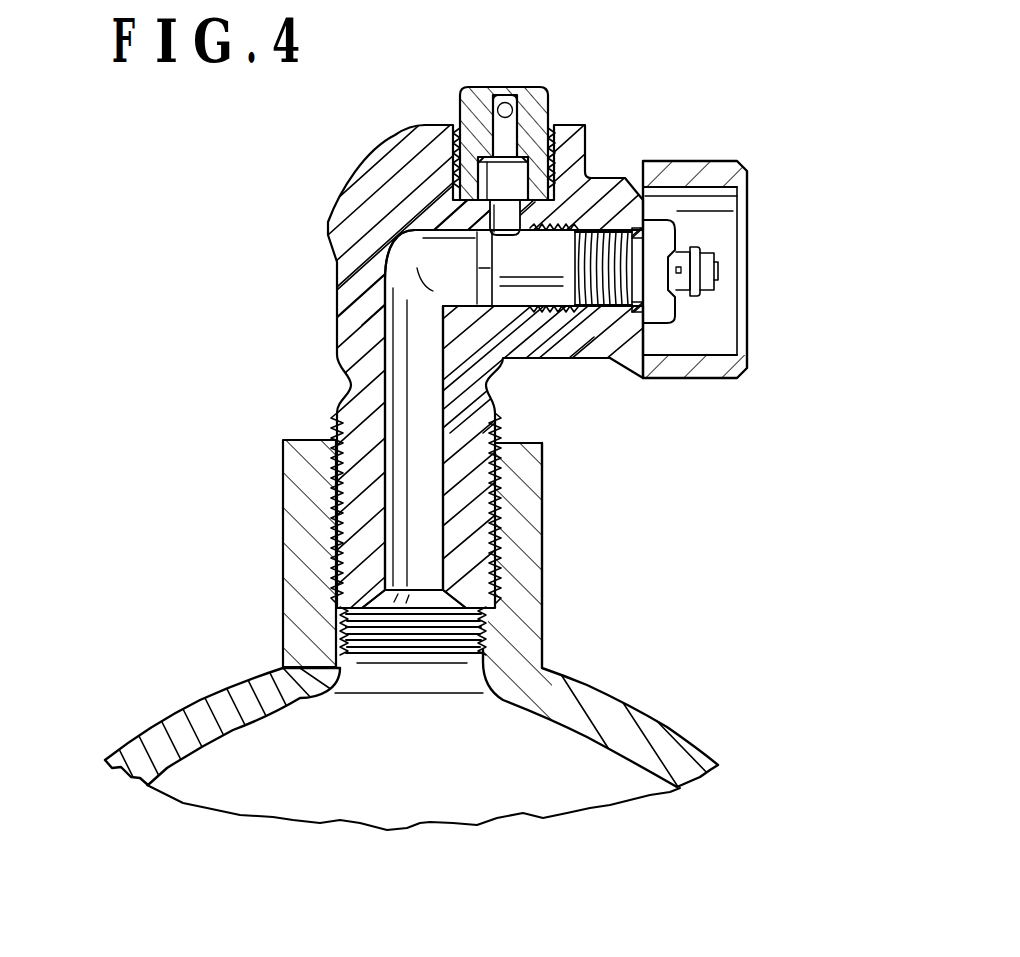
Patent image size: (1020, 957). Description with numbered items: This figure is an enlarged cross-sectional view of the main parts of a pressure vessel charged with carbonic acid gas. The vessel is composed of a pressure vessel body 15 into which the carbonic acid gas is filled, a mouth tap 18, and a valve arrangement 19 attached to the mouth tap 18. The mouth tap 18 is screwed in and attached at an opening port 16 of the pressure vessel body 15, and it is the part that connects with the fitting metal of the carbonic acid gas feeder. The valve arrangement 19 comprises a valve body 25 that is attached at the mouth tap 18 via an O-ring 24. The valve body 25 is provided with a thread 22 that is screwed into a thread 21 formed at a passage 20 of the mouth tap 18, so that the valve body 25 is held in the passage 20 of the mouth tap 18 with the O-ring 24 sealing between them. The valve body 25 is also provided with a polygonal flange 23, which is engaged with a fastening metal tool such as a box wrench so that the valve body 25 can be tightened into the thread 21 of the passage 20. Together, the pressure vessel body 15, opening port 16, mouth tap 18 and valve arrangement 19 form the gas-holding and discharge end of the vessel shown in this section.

The pressure vessel body 15 is at (628, 712).
The opening port 16 is at (392, 657).
The mouth tap 18 is at (349, 181).
The valve arrangement 19 is at (722, 260).
The passage 20 is at (413, 325).
The thread 21 is at (591, 302).
The thread 22 is at (600, 226).
The polygonal flange 23 is at (660, 222).
The O-ring 24 is at (636, 318).
The valve body 25 is at (546, 298).